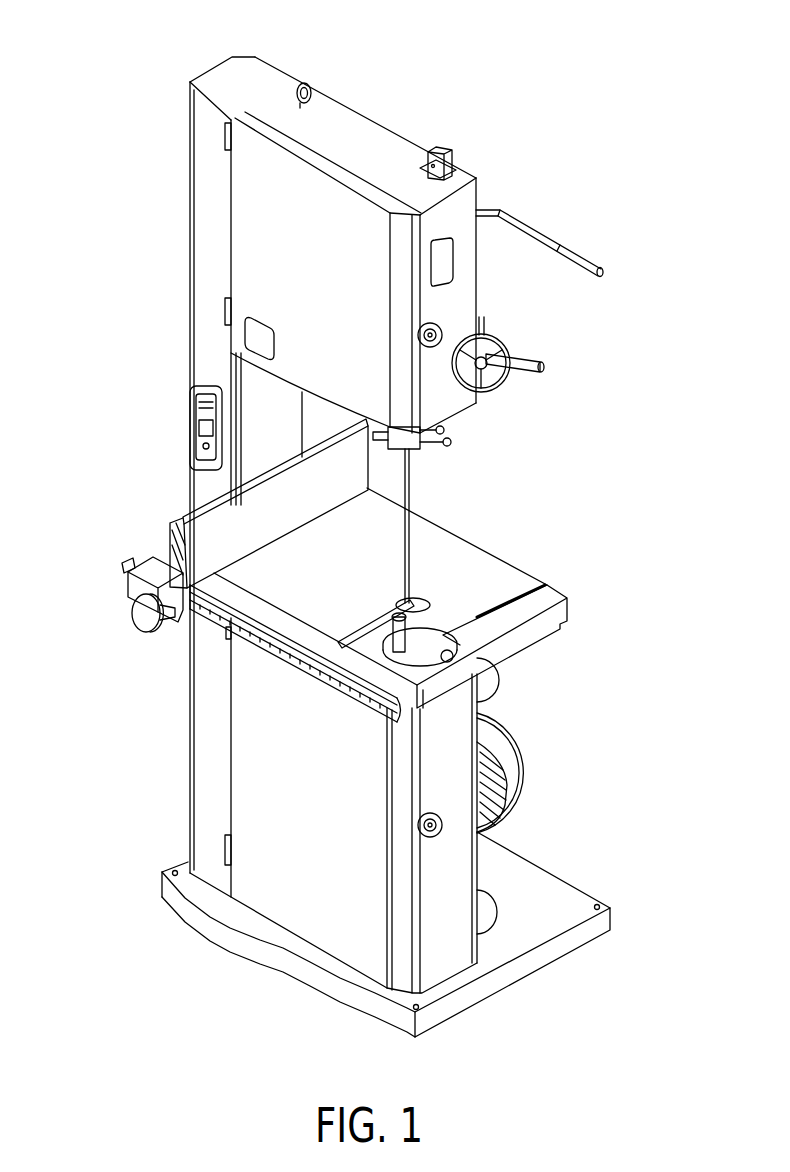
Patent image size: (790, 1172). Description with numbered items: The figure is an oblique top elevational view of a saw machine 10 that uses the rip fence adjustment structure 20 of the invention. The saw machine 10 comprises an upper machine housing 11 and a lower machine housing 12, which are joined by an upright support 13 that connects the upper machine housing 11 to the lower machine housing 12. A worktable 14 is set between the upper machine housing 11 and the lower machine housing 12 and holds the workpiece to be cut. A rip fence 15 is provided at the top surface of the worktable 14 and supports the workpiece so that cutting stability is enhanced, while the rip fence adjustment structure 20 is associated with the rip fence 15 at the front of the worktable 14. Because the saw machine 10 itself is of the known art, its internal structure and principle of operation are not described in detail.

The saw machine 10 is at (590, 108).
The upper machine housing 11 is at (335, 115).
The lower machine housing 12 is at (248, 778).
The upright support 13 is at (203, 235).
The worktable 14 is at (495, 577).
The rip fence 15 is at (202, 528).
The rip fence adjustment structure 20 is at (132, 627).